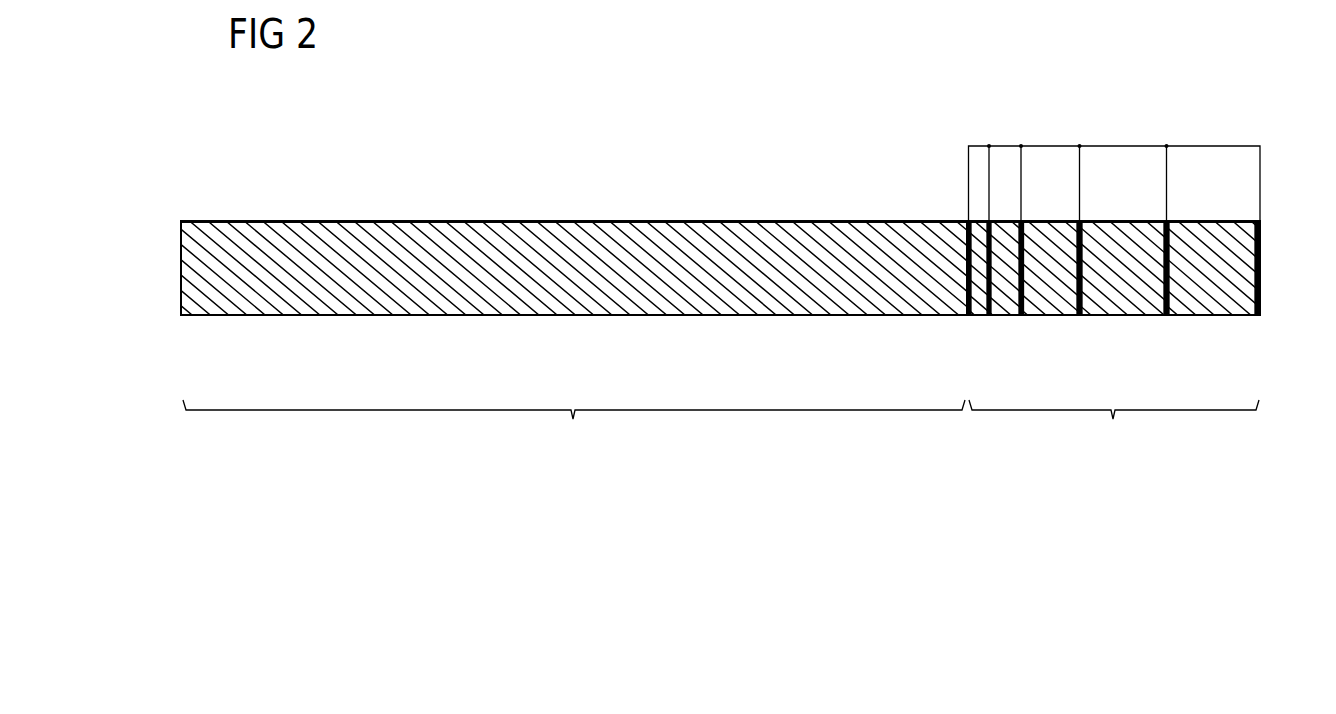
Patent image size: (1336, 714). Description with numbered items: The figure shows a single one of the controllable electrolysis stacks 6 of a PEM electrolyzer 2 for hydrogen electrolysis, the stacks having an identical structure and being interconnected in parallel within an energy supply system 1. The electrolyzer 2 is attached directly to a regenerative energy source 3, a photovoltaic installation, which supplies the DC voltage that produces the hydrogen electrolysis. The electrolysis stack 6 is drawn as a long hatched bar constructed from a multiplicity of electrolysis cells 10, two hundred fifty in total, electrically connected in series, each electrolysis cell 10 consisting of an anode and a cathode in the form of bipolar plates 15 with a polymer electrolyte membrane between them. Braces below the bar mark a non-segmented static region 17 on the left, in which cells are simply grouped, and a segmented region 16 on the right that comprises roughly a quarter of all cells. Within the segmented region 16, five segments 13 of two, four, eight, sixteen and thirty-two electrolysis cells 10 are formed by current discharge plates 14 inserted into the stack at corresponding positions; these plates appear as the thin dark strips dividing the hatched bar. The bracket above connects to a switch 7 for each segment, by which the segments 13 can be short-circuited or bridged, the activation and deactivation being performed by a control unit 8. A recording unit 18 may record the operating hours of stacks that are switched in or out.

The energy supply system 1 is at (290, 200).
The regenerative energy source 3 is at (720, 215).
The control unit 8 is at (720, 215).
The recording unit 18 is at (720, 215).
The PEM electrolyzer 2 is at (487, 340).
The electrolysis stack 6 is at (720, 302).
The electrolysis cell 10 is at (720, 302).
The switch 7 is at (979, 145).
The segment 13 is at (1004, 208).
The current discharge plate 14 is at (1018, 316).
The bipolar plate 15 is at (1146, 304).
The segmented region 16 is at (1114, 427).
The non-segmented static region 17 is at (574, 427).